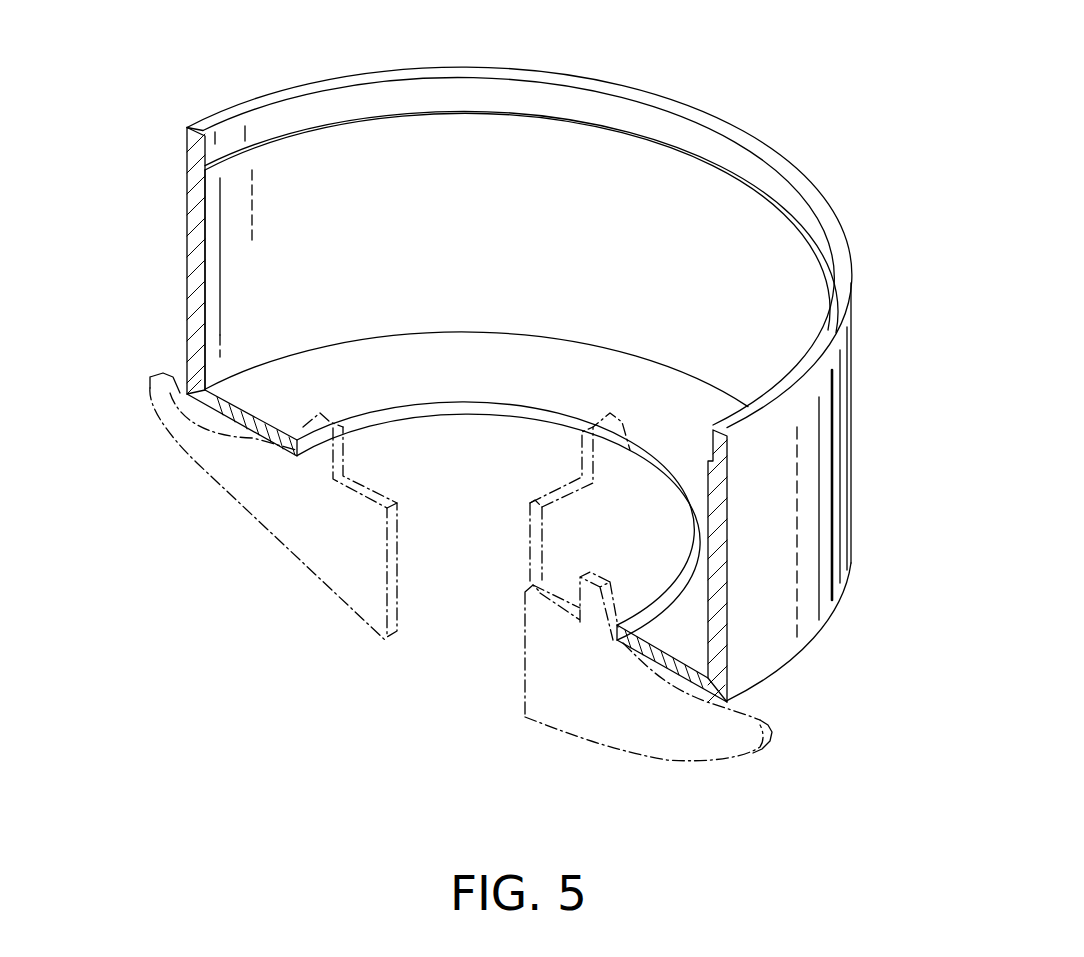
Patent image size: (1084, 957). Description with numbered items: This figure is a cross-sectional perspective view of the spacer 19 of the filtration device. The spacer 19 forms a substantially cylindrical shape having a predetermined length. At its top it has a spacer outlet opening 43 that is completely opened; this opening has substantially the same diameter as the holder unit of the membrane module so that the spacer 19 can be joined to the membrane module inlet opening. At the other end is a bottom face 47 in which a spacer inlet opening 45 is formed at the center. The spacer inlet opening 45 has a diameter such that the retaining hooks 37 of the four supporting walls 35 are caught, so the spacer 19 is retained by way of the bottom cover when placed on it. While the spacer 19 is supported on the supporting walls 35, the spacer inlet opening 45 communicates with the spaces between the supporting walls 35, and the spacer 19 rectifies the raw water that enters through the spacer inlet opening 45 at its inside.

The spacer 19 is at (850, 487).
The supporting walls 35 is at (158, 362).
The retaining hooks 37 is at (328, 422).
The spacer outlet opening 43 is at (641, 212).
The spacer inlet opening 45 is at (468, 480).
The bottom face 47 is at (363, 380).